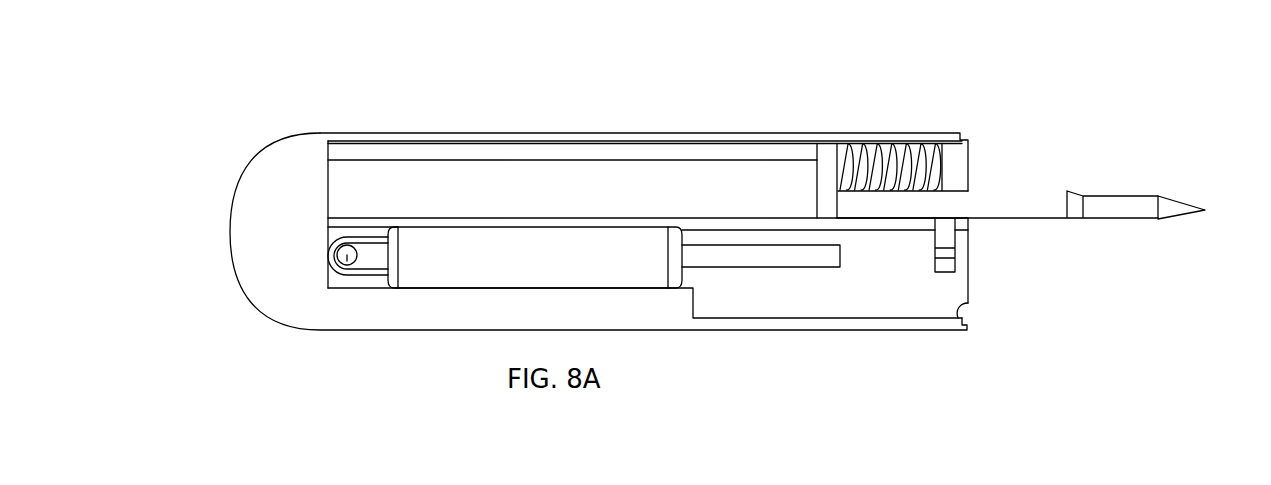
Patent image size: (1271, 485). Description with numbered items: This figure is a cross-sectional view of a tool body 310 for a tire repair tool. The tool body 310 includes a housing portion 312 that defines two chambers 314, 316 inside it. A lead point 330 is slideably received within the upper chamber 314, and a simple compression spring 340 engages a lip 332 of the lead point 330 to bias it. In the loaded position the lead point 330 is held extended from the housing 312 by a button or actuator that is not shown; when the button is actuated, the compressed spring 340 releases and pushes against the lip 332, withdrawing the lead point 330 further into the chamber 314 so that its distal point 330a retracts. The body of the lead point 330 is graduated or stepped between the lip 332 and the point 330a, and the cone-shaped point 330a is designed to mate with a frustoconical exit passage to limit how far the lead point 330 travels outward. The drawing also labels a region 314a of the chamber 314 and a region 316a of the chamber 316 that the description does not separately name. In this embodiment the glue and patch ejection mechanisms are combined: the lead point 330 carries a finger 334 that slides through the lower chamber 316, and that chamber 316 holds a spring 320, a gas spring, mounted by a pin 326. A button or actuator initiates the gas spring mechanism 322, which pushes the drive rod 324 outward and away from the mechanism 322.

The tool body 310 is at (560, 103).
The housing portion 312 is at (277, 137).
The chamber 314 is at (388, 189).
The shaft opening in housing 314a is at (970, 187).
The chamber 316 is at (912, 309).
The housing notch 316a is at (968, 307).
The spring 320 is at (548, 266).
The gas spring mechanism 322 is at (438, 284).
The drive rod 324 is at (753, 264).
The pin 326 is at (337, 256).
The lead point 330 is at (1037, 220).
The point 330a is at (1205, 212).
The lip 332 is at (817, 168).
The finger 334 is at (957, 247).
The compression spring 340 is at (887, 142).